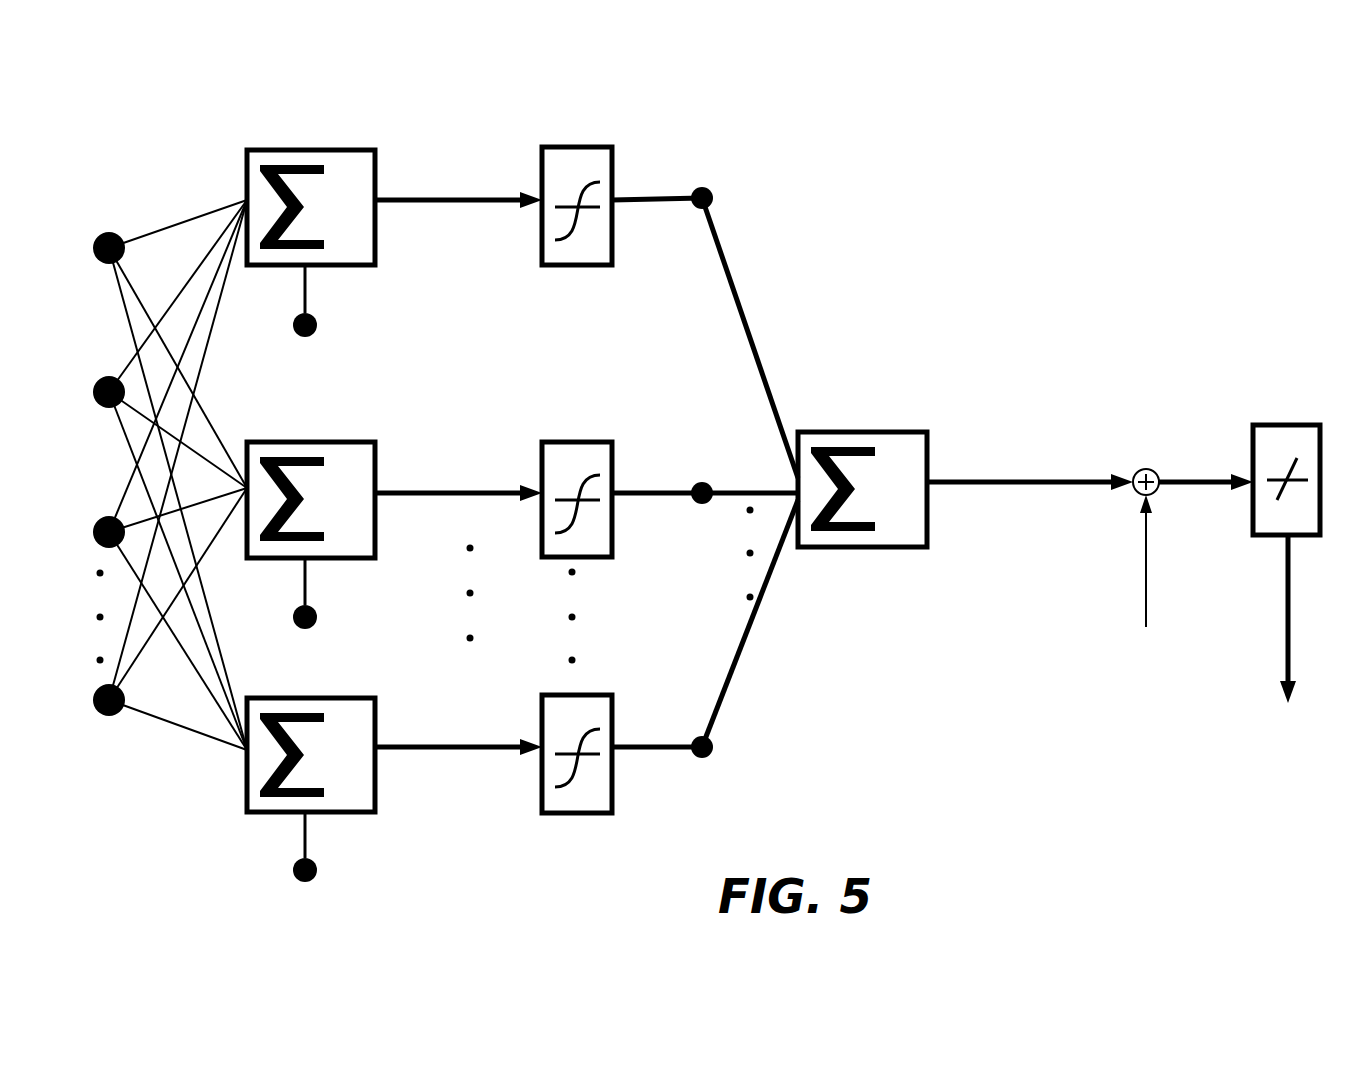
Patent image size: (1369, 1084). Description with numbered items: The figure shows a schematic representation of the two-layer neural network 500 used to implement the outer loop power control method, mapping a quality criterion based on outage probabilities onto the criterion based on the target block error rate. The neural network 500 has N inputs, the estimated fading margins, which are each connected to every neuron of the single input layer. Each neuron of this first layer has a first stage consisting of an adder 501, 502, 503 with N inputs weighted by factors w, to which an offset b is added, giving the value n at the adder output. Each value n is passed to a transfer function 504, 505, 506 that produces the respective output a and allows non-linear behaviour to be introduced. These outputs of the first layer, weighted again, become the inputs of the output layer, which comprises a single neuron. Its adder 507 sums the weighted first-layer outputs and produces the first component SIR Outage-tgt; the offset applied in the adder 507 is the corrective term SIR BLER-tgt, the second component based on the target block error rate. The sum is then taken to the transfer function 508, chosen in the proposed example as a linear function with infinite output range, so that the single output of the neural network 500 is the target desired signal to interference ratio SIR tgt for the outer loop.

The neural network 500 is at (681, 514).
The adder 501 is at (297, 148).
The adder 502 is at (342, 440).
The adder 503 is at (357, 813).
The transfer function 504 is at (587, 147).
The transfer function 505 is at (578, 440).
The transfer function 506 is at (583, 815).
The adder 507 is at (863, 430).
The transfer function 508 is at (1288, 425).